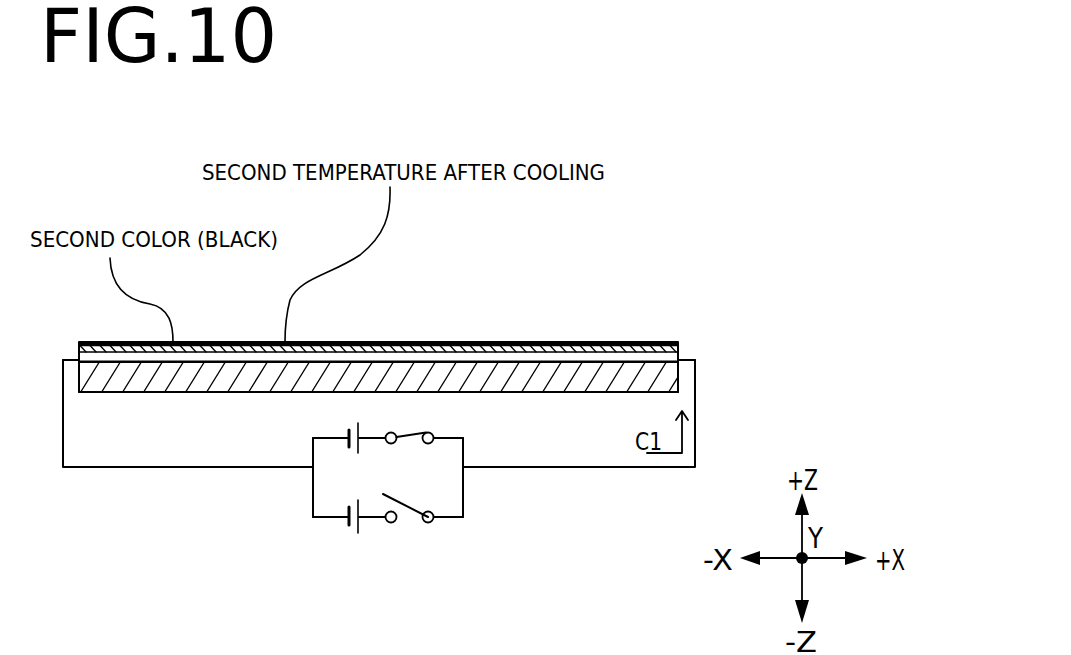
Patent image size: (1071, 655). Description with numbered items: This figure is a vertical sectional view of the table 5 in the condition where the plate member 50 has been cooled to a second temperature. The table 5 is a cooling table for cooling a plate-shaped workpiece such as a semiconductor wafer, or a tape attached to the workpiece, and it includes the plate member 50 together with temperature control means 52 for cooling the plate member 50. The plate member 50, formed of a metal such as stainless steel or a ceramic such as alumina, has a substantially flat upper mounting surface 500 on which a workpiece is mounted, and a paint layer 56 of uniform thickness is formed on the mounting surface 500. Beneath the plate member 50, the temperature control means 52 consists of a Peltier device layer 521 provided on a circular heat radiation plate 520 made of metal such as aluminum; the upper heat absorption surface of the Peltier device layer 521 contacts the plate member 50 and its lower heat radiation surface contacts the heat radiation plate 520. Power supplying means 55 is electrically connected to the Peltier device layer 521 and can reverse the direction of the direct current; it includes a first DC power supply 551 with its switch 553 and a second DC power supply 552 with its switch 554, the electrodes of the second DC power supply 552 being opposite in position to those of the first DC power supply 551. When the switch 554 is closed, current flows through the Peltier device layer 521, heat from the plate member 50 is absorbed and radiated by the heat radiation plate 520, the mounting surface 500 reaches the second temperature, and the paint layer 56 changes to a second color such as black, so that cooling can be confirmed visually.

The table 5 is at (712, 315).
The plate member 50 is at (373, 342).
The mounting surface 500 is at (535, 342).
The paint layer 56 is at (460, 342).
The temperature control means 52 is at (153, 420).
The heat radiation plate 520 is at (602, 387).
The Peltier device layer 521 is at (678, 352).
The power supplying means 55 is at (513, 498).
The first direct current power supply 551 is at (347, 525).
The second direct current power supply 552 is at (360, 450).
The switch for the first DC power supply 553 is at (431, 522).
The switch for the second DC power supply 554 is at (432, 434).